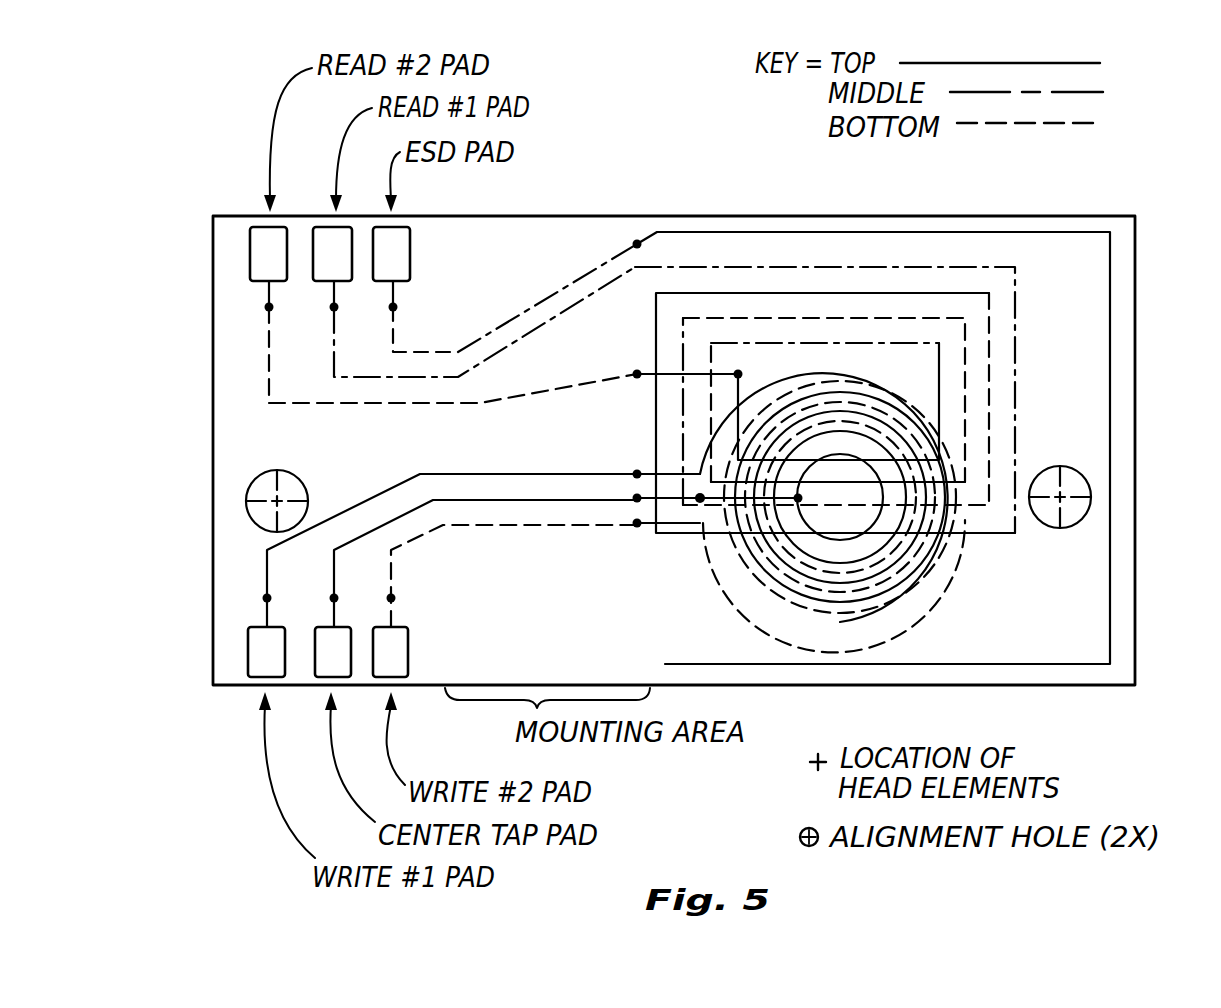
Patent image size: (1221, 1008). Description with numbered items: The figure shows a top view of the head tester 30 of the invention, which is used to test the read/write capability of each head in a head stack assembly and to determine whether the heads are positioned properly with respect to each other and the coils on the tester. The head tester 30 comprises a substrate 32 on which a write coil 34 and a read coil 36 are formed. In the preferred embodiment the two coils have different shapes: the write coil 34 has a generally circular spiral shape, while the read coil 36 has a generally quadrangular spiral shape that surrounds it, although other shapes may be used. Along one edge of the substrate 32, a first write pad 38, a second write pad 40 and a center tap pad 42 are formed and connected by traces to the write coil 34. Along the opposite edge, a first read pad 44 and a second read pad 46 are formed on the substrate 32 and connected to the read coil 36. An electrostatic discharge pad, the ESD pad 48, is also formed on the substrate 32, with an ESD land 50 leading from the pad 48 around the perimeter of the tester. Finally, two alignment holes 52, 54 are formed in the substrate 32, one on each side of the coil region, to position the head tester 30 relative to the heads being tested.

The head tester 30 is at (1193, 191).
The substrate 32 is at (1135, 403).
The write coil 34 is at (833, 623).
The read coil 36 is at (1018, 292).
The first write pad 38 is at (250, 663).
The second write pad 40 is at (408, 641).
The center tap pad 42 is at (327, 627).
The first read pad 44 is at (325, 283).
The second read pad 46 is at (250, 242).
The ESD pad 48 is at (410, 245).
The ESD land 50 is at (705, 226).
The alignment hole 52 is at (246, 512).
The alignment hole 54 is at (1085, 478).